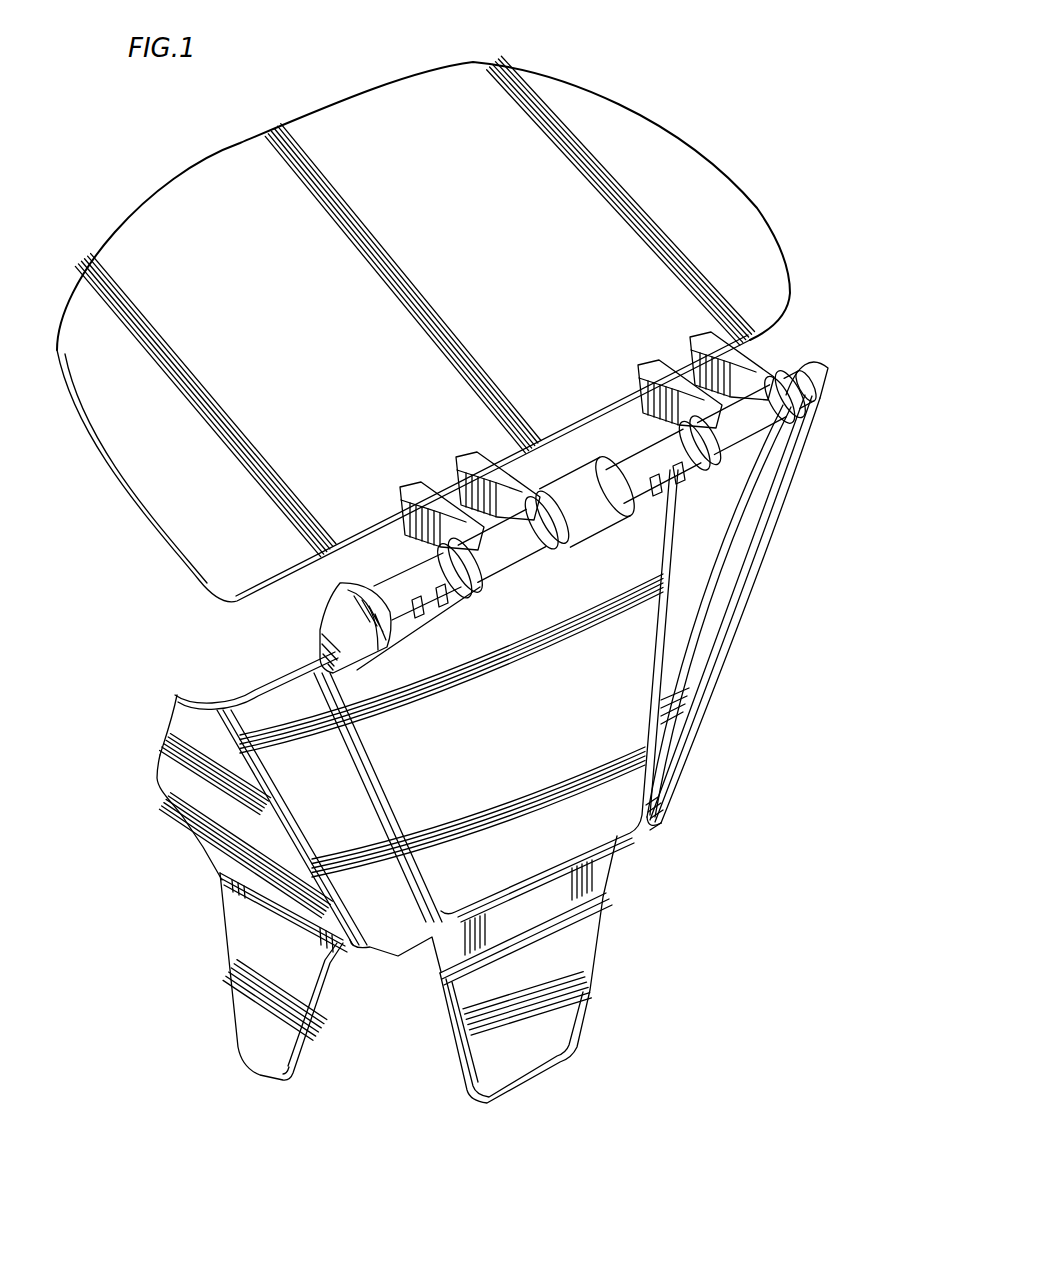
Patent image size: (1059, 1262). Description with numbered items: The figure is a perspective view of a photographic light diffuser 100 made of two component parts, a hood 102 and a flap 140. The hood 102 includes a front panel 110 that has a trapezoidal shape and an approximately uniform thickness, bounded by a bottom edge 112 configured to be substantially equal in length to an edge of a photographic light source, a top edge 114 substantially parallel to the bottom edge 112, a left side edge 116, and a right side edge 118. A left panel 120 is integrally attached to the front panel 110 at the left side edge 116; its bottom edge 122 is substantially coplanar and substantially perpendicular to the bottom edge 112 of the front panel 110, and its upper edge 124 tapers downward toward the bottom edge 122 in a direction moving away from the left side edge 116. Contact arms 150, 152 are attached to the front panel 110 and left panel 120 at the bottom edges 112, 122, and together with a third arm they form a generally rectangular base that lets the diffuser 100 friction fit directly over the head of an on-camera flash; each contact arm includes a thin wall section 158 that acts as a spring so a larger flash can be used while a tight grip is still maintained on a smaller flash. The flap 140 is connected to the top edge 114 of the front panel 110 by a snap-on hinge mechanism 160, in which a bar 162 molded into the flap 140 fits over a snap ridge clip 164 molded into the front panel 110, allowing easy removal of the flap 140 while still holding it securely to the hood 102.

The diffuser 100 is at (705, 82).
The hood 102 is at (817, 495).
The front panel 110 is at (628, 703).
The bottom edge 112 is at (590, 880).
The top edge 114 is at (270, 683).
The left side edge 116 is at (178, 698).
The right side edge 118 is at (752, 605).
The left panel 120 is at (188, 827).
The bottom edge 122 is at (223, 887).
The upper edge 124 is at (178, 748).
The flap 140 is at (277, 128).
The contact arm 150 is at (543, 1005).
The contact arm 152 is at (272, 1003).
The thin wall section 158 is at (543, 938).
The hinge mechanism 160 is at (768, 385).
The bar 162 is at (775, 358).
The snap ridge clip 164 is at (333, 602).